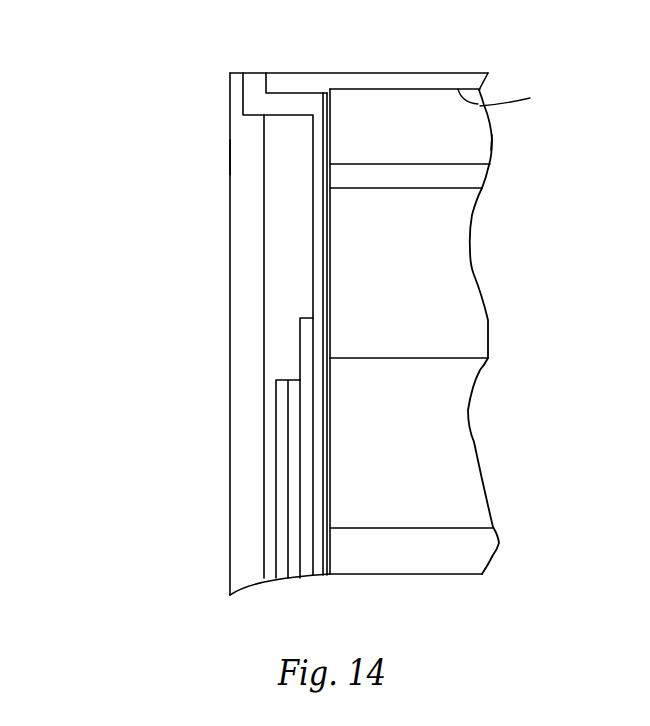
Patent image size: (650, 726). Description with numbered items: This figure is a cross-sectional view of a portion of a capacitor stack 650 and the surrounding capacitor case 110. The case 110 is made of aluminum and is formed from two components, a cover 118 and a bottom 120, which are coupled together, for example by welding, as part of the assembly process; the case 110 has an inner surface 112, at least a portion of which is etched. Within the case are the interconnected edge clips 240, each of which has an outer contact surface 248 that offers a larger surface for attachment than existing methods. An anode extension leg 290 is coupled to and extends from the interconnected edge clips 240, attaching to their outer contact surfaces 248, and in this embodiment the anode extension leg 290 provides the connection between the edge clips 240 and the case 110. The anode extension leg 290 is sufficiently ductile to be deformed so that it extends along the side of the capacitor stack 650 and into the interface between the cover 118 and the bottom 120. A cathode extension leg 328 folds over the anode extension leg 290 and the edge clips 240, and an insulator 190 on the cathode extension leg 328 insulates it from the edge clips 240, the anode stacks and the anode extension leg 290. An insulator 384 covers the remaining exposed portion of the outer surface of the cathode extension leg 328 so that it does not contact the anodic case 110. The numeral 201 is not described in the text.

The capacitor stack 650 is at (143, 522).
The case 110 is at (230, 157).
The inner surface 112 is at (265, 152).
The bottom 120 is at (230, 183).
The anode extension leg 290 is at (253, 84).
The cover 118 is at (452, 80).
The outer surface 201 is at (491, 138).
The edge clip 240 is at (474, 274).
The outer contact surface 248 is at (333, 281).
The insulator 190 is at (305, 332).
The cathode extension leg 328 is at (295, 400).
The insulator 384 is at (285, 442).